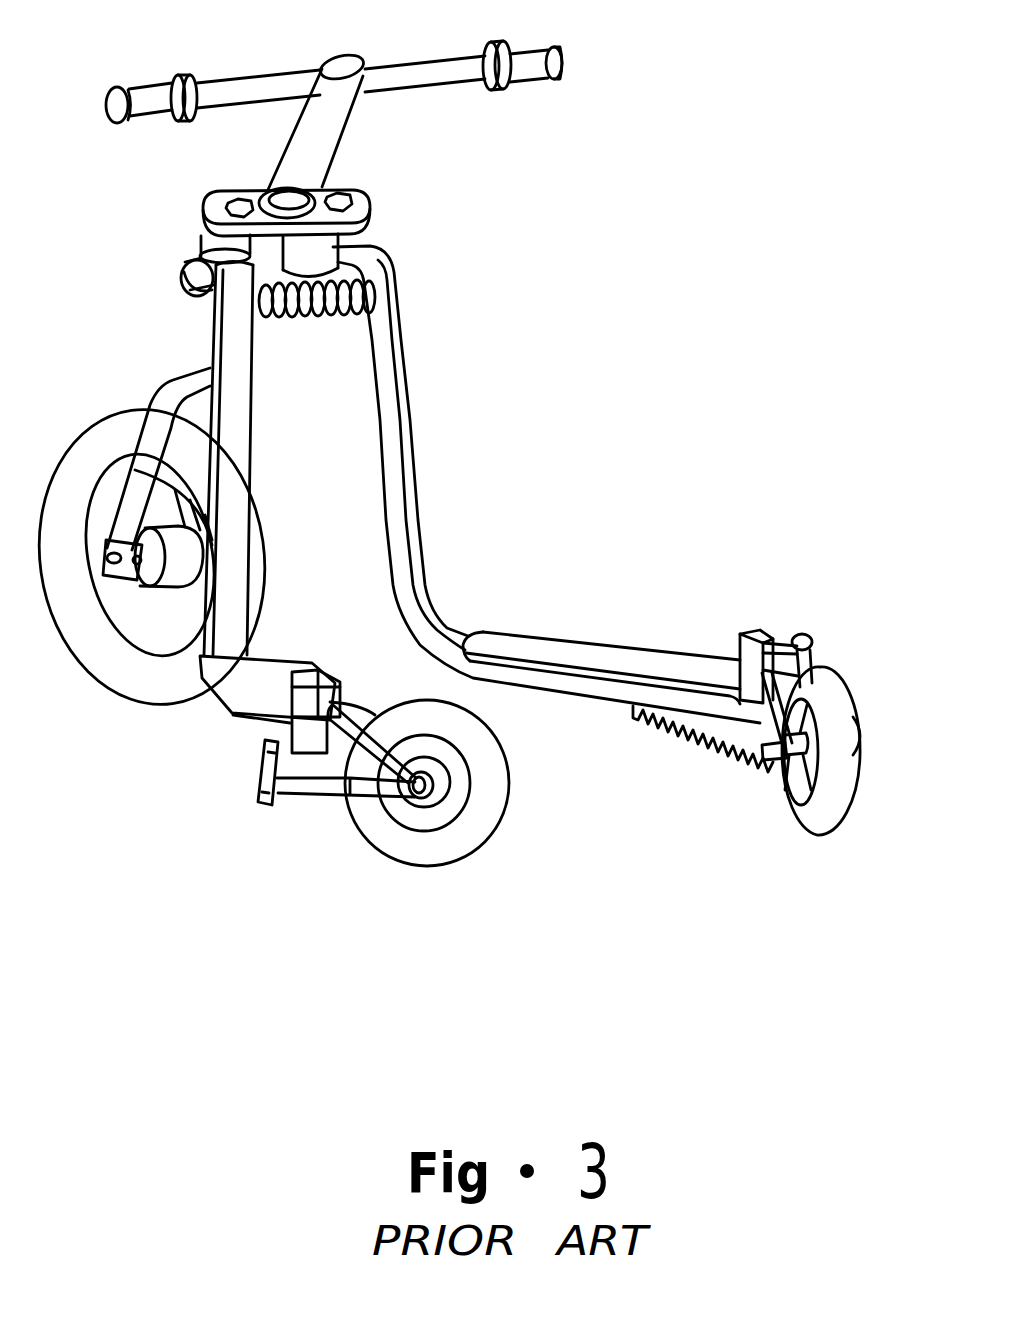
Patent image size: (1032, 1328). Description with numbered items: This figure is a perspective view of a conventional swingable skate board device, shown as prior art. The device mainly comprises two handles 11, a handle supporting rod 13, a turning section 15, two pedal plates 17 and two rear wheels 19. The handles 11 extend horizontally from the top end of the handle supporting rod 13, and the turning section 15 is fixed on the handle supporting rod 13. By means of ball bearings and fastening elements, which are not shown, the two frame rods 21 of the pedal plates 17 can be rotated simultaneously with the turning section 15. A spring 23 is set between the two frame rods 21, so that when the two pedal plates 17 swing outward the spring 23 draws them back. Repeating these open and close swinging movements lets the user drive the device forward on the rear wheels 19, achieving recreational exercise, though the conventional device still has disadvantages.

The handles 11 is at (252, 92).
The handle supporting rod 13 is at (330, 141).
The turning section 15 is at (256, 200).
The pedal plates 17 is at (543, 647).
The rear wheels 19 is at (838, 773).
The frame rods 21 is at (393, 466).
The spring 23 is at (338, 326).